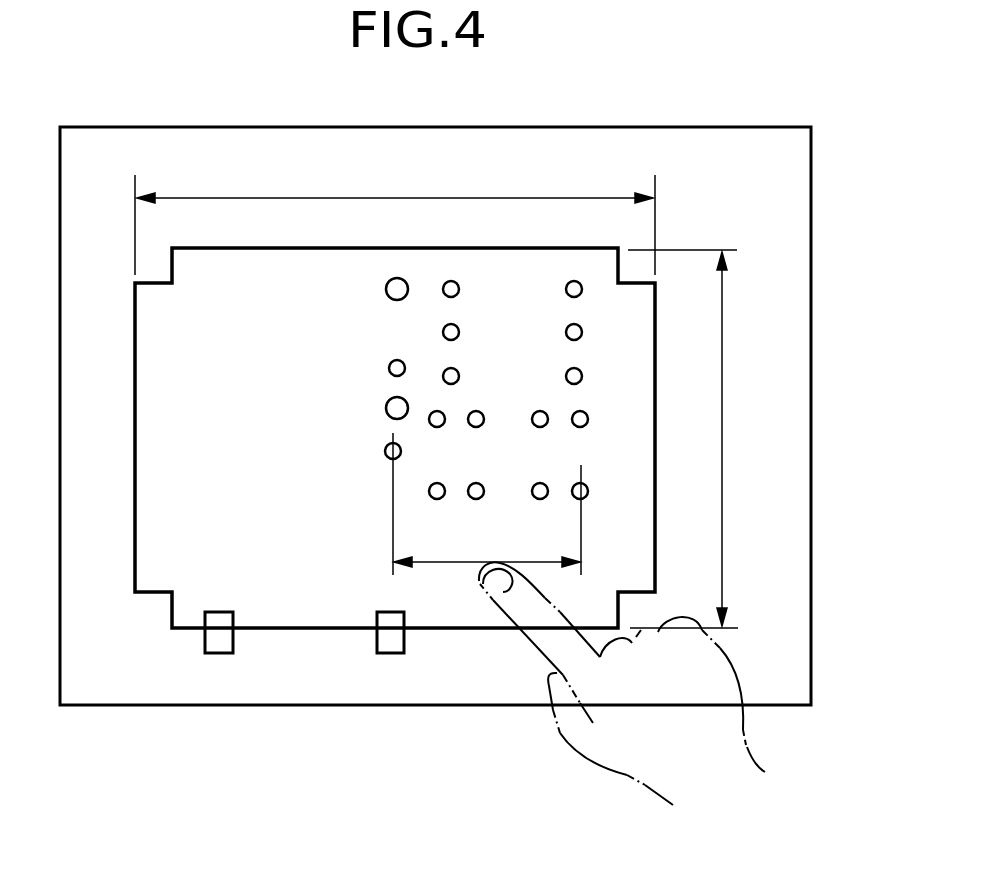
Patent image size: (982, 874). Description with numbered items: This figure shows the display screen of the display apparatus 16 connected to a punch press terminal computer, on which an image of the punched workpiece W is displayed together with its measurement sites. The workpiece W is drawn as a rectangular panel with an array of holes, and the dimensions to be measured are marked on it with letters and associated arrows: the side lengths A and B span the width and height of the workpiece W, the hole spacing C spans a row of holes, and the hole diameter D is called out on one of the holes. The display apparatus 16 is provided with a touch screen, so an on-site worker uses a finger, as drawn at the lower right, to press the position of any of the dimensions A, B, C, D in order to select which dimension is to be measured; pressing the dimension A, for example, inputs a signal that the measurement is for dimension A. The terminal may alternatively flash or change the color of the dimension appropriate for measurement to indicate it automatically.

The display apparatus 16 is at (812, 405).
The workpiece W is at (198, 474).
The side length A is at (395, 215).
The side length B is at (690, 439).
The hole spacing C is at (487, 504).
The hole diameter D is at (394, 460).